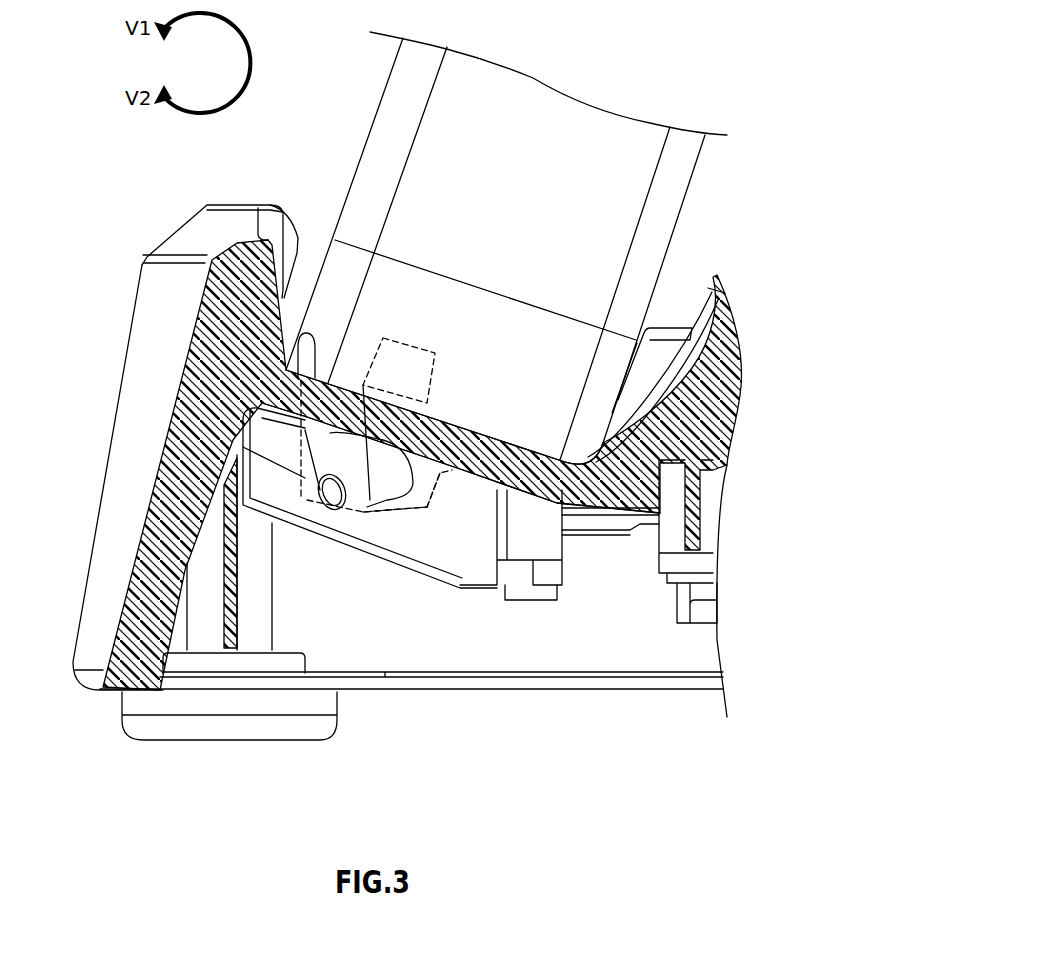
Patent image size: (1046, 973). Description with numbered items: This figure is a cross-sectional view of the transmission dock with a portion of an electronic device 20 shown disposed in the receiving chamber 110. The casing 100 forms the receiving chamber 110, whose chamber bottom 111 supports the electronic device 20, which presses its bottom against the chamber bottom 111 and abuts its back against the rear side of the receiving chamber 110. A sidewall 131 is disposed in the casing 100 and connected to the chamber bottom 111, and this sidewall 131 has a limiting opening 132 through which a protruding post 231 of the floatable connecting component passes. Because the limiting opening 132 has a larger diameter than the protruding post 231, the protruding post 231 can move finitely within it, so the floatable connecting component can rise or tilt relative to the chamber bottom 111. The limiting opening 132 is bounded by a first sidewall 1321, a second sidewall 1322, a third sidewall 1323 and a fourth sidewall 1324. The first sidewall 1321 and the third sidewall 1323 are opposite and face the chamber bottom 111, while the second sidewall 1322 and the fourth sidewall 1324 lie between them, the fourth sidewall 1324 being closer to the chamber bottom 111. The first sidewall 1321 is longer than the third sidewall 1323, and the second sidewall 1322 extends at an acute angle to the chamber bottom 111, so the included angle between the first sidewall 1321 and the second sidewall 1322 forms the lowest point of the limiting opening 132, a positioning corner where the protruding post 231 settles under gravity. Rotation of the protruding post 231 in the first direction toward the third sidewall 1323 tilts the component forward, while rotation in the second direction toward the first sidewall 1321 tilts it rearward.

The electronic device 20 is at (400, 131).
The casing 100 is at (170, 335).
The receiving chamber 110 is at (302, 294).
The chamber bottom 111 is at (290, 331).
The sidewall 131 is at (422, 482).
The limiting opening 132 is at (265, 588).
The first sidewall 1321 is at (330, 434).
The second sidewall 1322 is at (380, 493).
The third sidewall 1323 is at (395, 506).
The fourth sidewall 1324 is at (302, 408).
The protruding post 231 is at (326, 500).